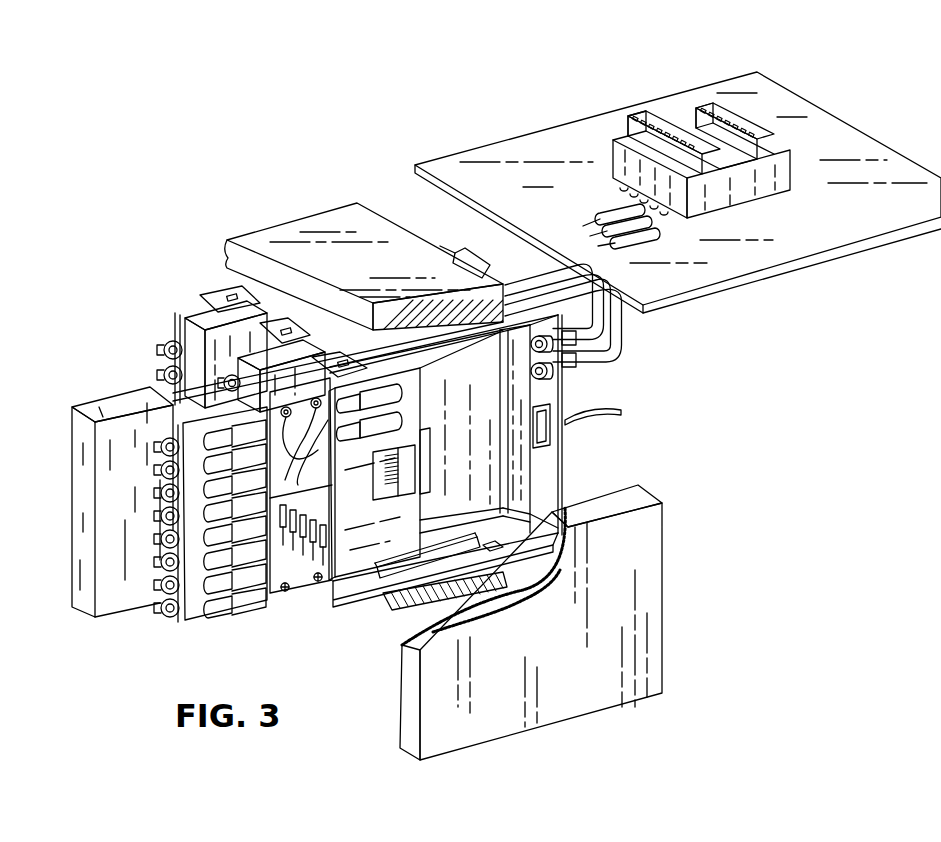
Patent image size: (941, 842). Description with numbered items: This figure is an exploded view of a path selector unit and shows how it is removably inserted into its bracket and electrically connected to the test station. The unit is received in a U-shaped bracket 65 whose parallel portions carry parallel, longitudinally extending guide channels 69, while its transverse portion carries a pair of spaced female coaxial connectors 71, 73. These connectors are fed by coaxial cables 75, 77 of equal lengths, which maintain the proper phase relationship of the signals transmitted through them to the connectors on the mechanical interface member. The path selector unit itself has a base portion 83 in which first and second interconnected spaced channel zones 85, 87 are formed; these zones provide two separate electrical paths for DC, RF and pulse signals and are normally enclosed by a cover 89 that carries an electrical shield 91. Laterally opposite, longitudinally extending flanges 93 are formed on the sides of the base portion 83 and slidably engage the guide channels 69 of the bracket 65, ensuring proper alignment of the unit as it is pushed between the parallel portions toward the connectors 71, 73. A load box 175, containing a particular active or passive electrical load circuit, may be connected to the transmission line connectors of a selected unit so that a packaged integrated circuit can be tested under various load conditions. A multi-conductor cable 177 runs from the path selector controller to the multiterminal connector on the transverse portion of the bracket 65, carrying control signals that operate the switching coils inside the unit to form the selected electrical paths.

The U-shaped bracket 65 is at (568, 452).
The guide channels 69 is at (370, 582).
The coaxial connector 71 is at (534, 353).
The coaxial connector 73 is at (540, 380).
The coaxial cable 75 is at (612, 335).
The coaxial cable 77 is at (612, 350).
The base portion 83 is at (173, 400).
The first channel zone 85 is at (210, 607).
The second channel zone 87 is at (338, 590).
The cover 89 is at (580, 705).
The electrical shield 91 is at (433, 632).
The flanges 93 is at (168, 393).
The load box 175 is at (113, 486).
The multi-conductor cable 177 is at (612, 410).